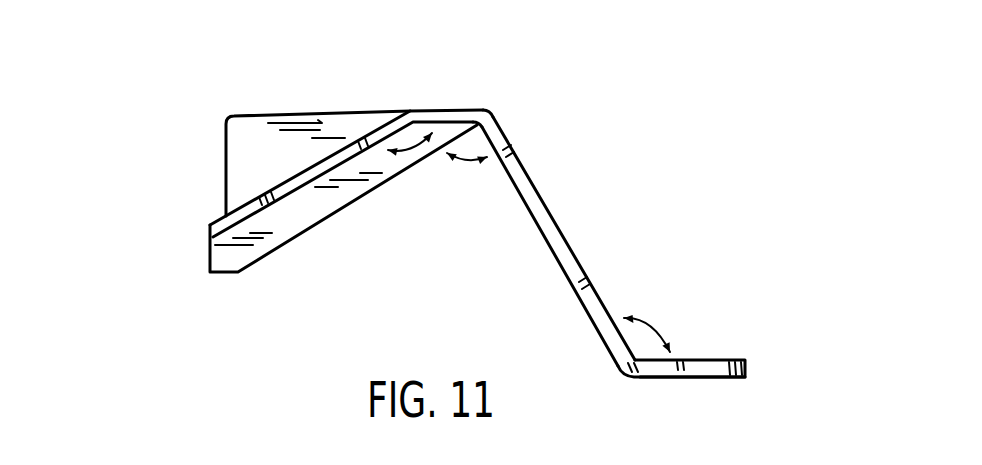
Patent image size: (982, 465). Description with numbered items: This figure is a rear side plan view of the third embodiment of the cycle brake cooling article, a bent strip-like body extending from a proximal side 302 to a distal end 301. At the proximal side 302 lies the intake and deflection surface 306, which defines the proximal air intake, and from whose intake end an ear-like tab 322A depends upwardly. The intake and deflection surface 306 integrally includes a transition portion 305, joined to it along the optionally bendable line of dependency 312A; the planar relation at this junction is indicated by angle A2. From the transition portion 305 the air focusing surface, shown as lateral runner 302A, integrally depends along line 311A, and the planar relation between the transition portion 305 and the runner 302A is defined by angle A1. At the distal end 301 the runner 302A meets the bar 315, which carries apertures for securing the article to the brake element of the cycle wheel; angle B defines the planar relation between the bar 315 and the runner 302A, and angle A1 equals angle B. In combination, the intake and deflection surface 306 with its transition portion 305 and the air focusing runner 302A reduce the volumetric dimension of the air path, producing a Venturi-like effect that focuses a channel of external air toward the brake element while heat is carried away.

The distal end 301 is at (767, 355).
The proximal side 302 is at (213, 188).
The air focusing surface (lateral runner) 302A is at (565, 233).
The transition portion 305 is at (452, 110).
The intake and deflection surface 306 is at (305, 210).
The line of dependency 311A is at (498, 118).
The line of dependency (optionally bendable line) 312A is at (413, 110).
The bar 315 is at (717, 380).
The ear-like tab 322A is at (254, 135).
The angle A1 is at (487, 158).
The angle A2 is at (413, 168).
The angle B is at (657, 331).